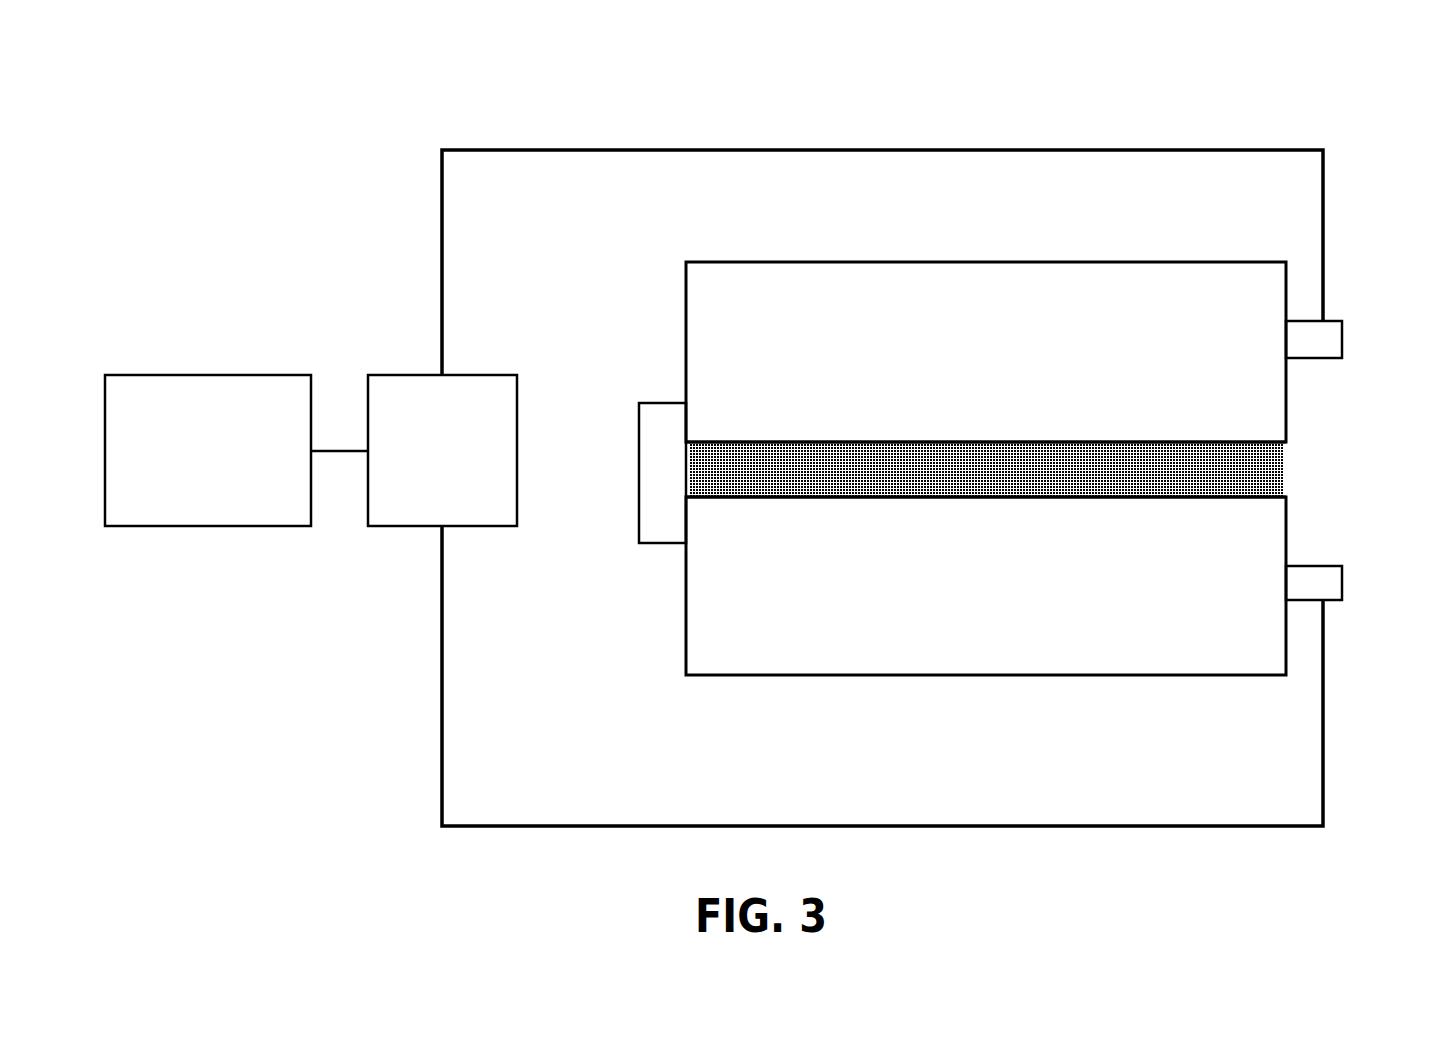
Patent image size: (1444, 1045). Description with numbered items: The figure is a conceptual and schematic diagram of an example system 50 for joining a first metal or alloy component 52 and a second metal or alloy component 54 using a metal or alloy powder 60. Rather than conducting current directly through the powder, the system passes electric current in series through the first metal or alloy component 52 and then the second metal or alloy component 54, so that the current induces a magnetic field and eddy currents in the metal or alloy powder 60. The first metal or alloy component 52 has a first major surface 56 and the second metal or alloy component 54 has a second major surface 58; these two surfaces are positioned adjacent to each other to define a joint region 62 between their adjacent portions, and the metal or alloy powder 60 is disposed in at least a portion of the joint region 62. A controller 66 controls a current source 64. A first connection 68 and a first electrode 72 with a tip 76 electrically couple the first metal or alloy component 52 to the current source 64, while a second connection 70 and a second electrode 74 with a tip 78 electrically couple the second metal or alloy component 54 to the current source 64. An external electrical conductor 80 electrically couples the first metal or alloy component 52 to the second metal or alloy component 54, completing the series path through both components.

The system 50 is at (197, 87).
The first metal or alloy component 52 is at (810, 262).
The second metal or alloy component 54 is at (825, 677).
The first major surface 56 is at (743, 442).
The second major surface 58 is at (752, 497).
The metal or alloy powder 60 is at (1283, 492).
The joint region 62 is at (1305, 450).
The current source 64 is at (442, 450).
The controller 66 is at (236, 450).
The first connection 68 is at (948, 150).
The second connection 70 is at (947, 826).
The first electrode 72 is at (1342, 333).
The second electrode 74 is at (1342, 583).
The tip 76 is at (1290, 321).
The tip 78 is at (1290, 600).
The external electrical conductor 80 is at (639, 440).